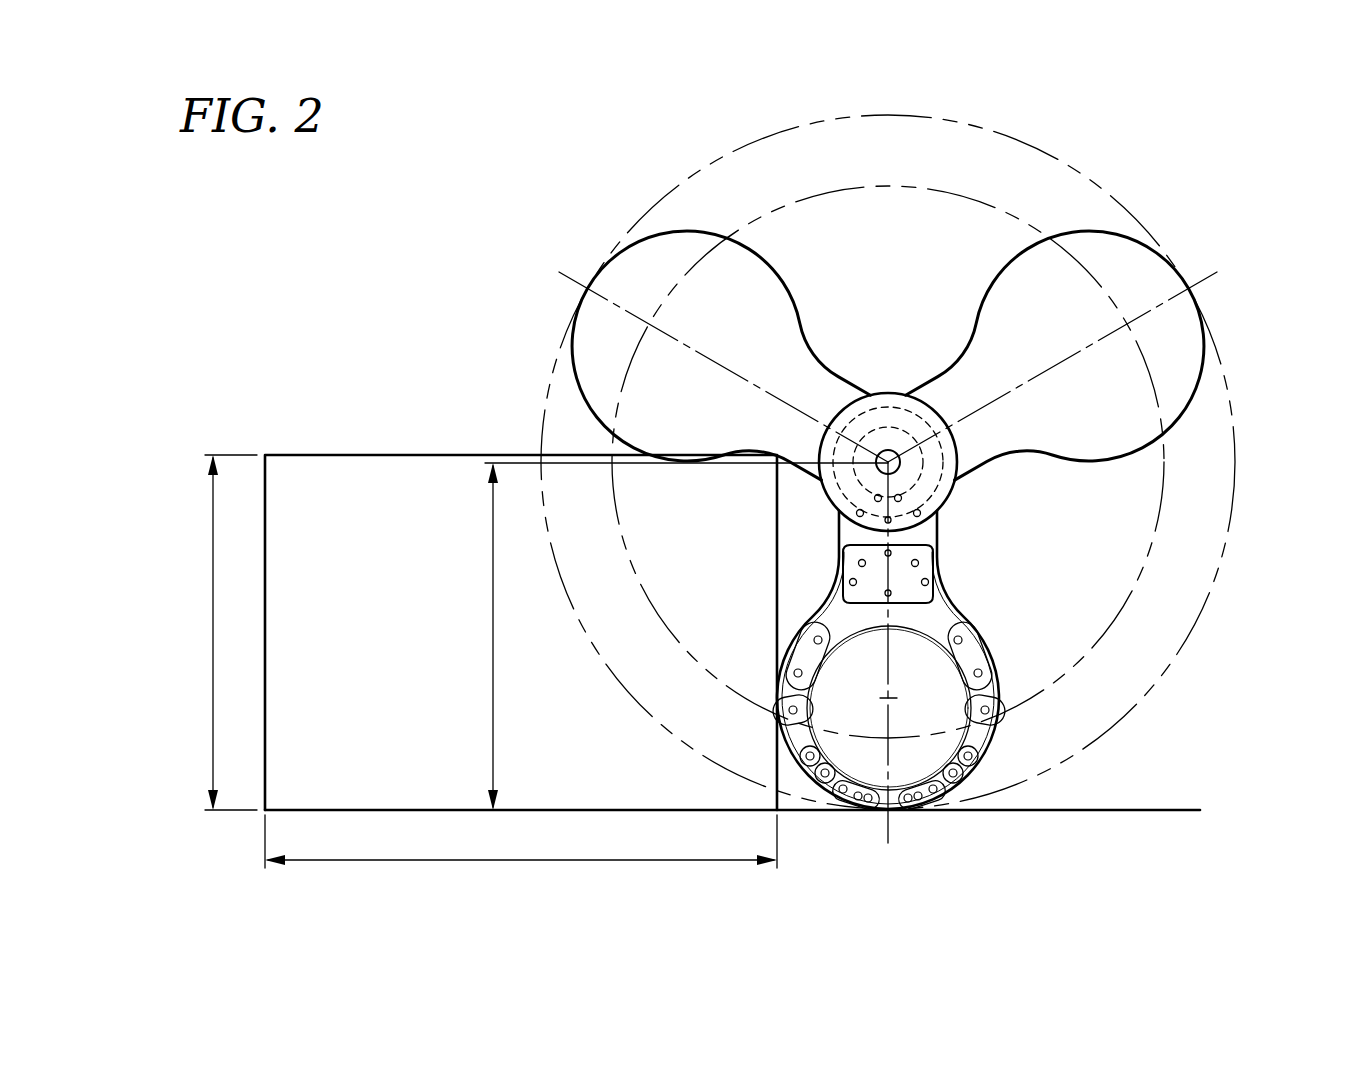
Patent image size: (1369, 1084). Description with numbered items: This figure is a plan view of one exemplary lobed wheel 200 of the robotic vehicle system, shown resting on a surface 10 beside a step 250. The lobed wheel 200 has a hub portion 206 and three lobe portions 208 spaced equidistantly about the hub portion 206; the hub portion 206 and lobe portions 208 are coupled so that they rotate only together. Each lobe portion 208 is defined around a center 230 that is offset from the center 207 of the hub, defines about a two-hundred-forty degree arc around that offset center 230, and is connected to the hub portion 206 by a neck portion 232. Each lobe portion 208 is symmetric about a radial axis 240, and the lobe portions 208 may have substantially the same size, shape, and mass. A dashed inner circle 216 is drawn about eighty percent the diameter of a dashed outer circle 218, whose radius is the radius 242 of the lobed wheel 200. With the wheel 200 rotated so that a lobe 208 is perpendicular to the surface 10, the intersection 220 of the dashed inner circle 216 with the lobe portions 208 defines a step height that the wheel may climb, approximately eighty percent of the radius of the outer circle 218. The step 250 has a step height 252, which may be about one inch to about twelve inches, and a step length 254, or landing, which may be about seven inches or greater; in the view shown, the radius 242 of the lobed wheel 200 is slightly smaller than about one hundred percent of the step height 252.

The surface 10 is at (1175, 810).
The lobed wheel 200 is at (490, 282).
The hub portion 206 is at (947, 503).
The center of the hub 207 is at (888, 450).
The lobe portions 208 is at (1011, 264).
The dashed inner circle 216 is at (1148, 557).
The dashed outer circle 218 is at (1197, 620).
The intersection 220 is at (615, 432).
The offset center 230 is at (889, 700).
The neck portion 232 is at (833, 374).
The radial axis 240 is at (889, 830).
The radius of the lobed wheel 242 is at (493, 637).
The step 250 is at (343, 455).
The step height 252 is at (213, 632).
The step length 254 is at (522, 860).